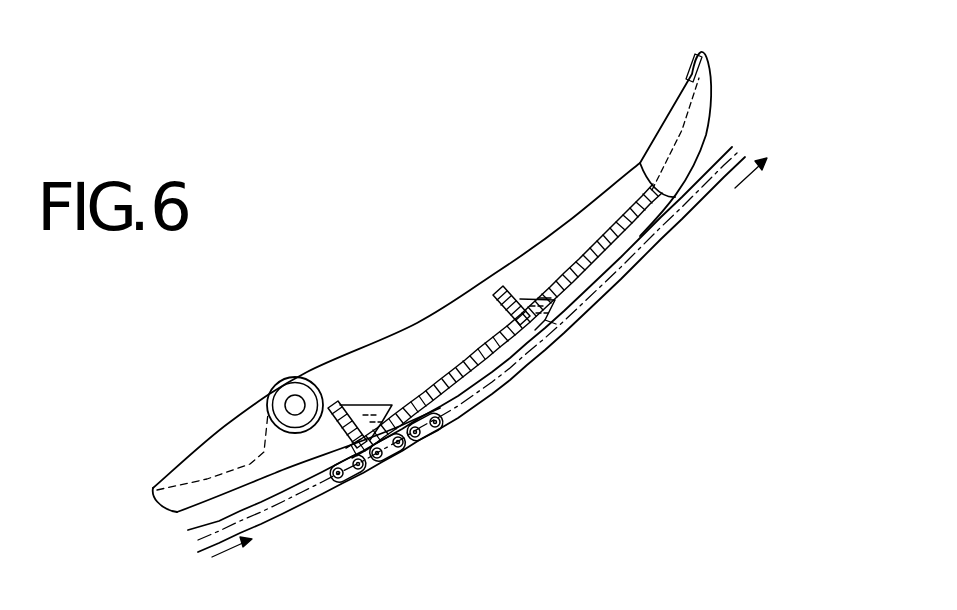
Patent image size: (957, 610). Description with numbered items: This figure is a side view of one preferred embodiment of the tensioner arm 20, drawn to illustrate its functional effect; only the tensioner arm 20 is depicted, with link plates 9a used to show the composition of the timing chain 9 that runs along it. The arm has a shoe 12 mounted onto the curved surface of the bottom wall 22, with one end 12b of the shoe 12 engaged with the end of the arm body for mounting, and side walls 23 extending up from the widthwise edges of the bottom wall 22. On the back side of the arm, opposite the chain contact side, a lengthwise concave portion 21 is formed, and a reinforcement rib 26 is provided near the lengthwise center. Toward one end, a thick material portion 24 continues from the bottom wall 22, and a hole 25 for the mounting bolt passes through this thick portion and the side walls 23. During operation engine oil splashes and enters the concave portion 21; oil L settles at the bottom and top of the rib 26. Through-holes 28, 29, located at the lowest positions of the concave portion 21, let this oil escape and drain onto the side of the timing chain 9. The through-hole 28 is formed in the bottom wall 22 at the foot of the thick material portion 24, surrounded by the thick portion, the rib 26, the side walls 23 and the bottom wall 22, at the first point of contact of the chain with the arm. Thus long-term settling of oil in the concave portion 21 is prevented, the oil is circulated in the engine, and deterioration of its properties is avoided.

The timing chain 9 is at (709, 197).
The link plates 9a is at (403, 450).
The shoe 12 is at (731, 111).
The one end of the shoe 12b is at (690, 58).
The tensioner arm 20 is at (396, 332).
The lengthwise concave portion 21 is at (420, 333).
The bottom wall 22 is at (473, 357).
The side walls 23 is at (655, 155).
The thick material portion 24 is at (240, 436).
The hole 25 is at (301, 398).
The reinforcement rib 26 is at (516, 280).
The through-hole 28 is at (383, 430).
The through-hole 29 is at (556, 324).
The oil L is at (540, 296).